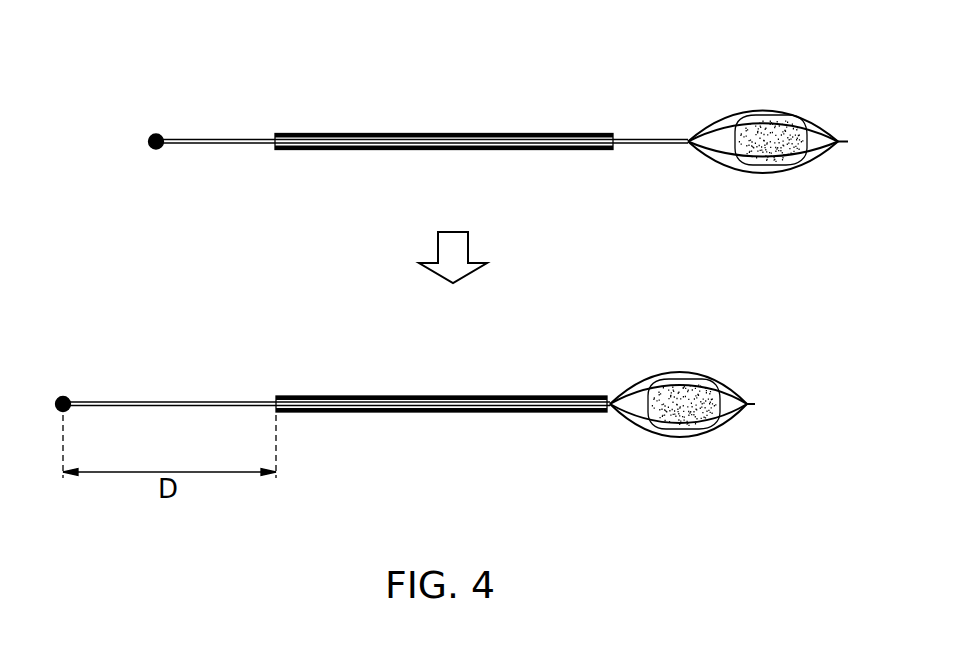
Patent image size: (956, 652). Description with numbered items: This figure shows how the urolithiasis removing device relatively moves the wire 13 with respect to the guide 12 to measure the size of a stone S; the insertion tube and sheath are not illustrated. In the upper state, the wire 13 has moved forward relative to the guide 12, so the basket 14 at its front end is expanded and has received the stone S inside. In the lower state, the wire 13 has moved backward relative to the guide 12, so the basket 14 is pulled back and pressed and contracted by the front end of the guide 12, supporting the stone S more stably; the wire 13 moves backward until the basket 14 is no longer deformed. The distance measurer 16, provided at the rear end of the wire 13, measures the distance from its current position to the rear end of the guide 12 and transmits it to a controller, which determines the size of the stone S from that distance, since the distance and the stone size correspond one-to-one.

The guide 12 is at (441, 133).
The wire 13 is at (647, 143).
The basket 14 is at (735, 117).
The distance measurer 16 is at (156, 133).
The stone S is at (773, 120).